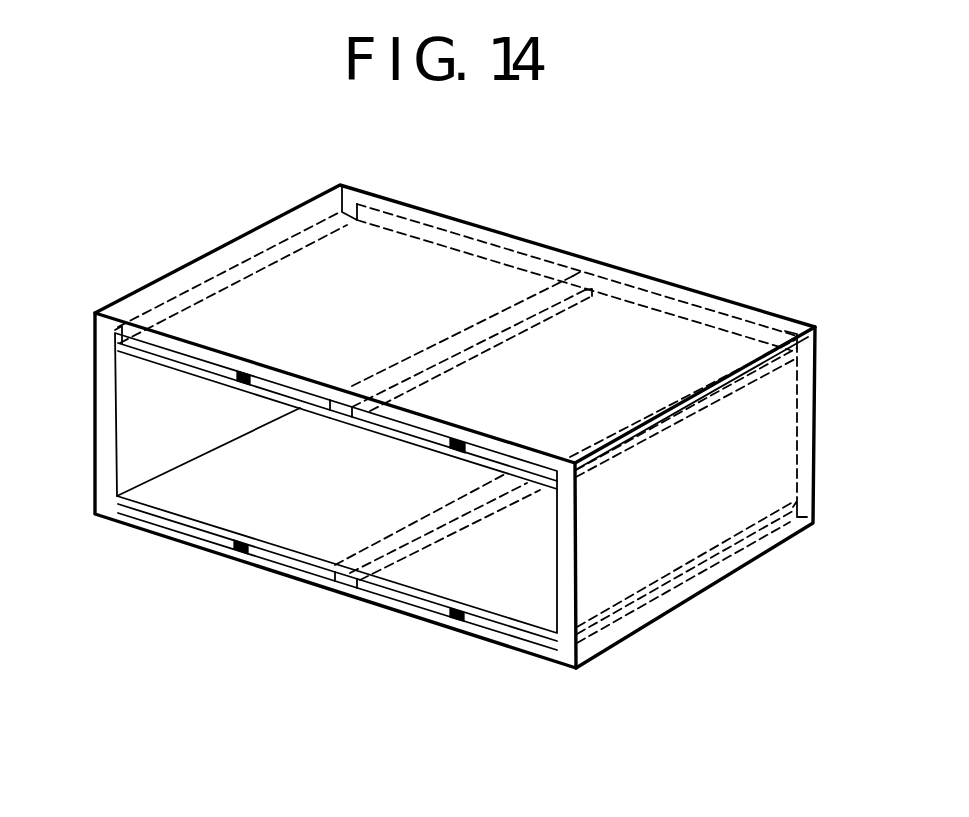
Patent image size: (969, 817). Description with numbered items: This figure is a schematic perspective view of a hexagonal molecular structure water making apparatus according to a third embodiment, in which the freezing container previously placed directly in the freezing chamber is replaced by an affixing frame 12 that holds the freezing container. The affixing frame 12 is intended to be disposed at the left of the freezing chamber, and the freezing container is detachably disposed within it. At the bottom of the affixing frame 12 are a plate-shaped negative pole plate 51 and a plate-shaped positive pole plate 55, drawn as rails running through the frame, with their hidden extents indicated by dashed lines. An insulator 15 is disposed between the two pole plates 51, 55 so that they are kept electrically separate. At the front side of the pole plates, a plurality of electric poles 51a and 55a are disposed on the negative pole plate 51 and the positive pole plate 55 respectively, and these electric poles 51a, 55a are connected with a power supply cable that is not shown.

The affixing frame 12 is at (820, 348).
The insulator 15 is at (547, 287).
The negative pole plate 51 is at (622, 315).
The electric poles 51a is at (455, 452).
The positive pole plate 55 is at (467, 272).
The electric poles 55a is at (244, 384).